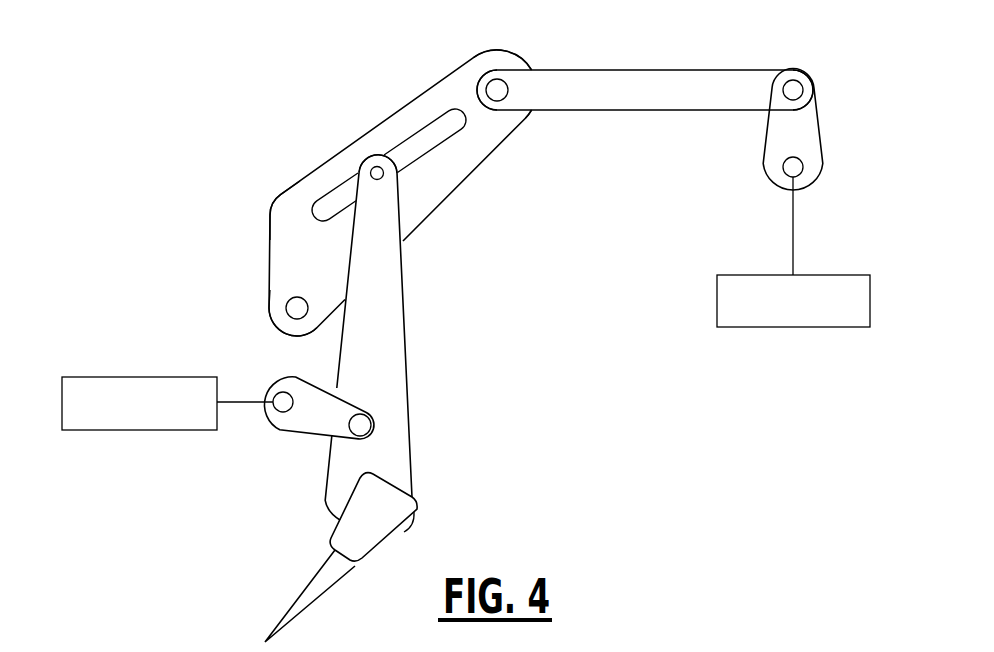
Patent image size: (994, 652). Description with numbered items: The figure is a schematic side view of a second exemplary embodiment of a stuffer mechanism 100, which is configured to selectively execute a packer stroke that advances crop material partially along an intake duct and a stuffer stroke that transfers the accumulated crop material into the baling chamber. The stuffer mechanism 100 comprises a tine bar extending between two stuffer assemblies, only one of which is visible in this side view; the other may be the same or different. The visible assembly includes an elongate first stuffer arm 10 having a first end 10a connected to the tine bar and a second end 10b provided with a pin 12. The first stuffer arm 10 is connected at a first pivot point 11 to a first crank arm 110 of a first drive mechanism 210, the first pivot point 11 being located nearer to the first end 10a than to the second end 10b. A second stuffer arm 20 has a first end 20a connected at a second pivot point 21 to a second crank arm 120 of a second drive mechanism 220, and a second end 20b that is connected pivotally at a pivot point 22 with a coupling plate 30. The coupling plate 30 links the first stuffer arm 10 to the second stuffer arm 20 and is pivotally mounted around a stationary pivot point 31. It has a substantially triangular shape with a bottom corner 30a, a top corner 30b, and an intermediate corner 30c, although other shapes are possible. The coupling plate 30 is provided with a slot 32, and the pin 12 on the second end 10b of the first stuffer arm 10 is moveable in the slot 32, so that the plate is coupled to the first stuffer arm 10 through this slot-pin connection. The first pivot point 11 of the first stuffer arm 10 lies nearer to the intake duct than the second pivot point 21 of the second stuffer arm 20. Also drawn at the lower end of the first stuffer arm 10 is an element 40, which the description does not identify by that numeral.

The first stuffer arm 10 is at (400, 353).
The first end of the first stuffer arm 10a is at (436, 476).
The second end of the first stuffer arm 10b is at (400, 205).
The first pivot point 11 is at (368, 424).
The pin 12 is at (378, 166).
The second stuffer arm 20 is at (655, 98).
The first end of the second stuffer arm 20a is at (747, 108).
The second end of the second stuffer arm 20b is at (533, 92).
The second pivot point 21 is at (792, 80).
The pivot point 22 is at (497, 93).
The coupling plate 30 is at (285, 146).
The bottom corner 30a is at (240, 317).
The top corner 30b is at (540, 48).
The intermediate corner 30c is at (252, 189).
The stationary pivot point 31 is at (291, 300).
The slot 32 is at (423, 115).
The tool 40 is at (312, 597).
The stuffer mechanism 100 is at (633, 512).
The first crank arm 110 is at (300, 424).
The second crank arm 120 is at (803, 137).
The first drive mechanism 210 is at (110, 418).
The second drive mechanism 220 is at (768, 317).